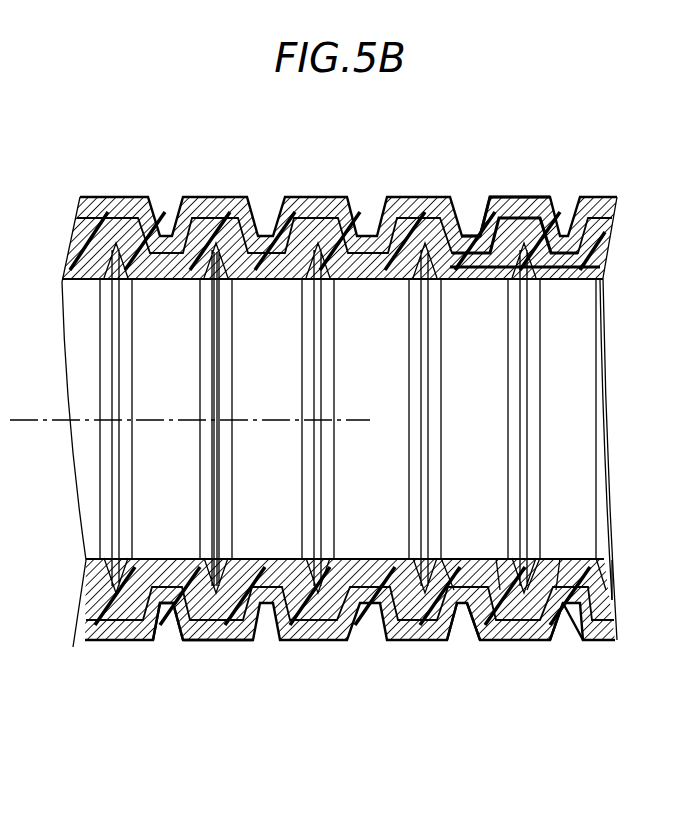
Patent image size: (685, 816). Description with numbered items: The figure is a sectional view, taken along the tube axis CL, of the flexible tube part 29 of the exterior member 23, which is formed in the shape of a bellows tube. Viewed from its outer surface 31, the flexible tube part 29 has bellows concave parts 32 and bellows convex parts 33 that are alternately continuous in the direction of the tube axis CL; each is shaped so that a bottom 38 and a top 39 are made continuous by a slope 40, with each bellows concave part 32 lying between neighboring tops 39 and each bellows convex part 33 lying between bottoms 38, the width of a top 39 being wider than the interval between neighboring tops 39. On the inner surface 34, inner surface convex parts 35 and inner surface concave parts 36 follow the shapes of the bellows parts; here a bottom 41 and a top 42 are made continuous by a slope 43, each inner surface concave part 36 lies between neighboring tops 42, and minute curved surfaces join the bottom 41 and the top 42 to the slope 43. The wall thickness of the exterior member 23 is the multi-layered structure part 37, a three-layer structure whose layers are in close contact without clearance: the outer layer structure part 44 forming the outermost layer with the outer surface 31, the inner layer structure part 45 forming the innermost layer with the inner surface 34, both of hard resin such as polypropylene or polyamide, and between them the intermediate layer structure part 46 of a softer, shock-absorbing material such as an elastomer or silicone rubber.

The exterior member 23 is at (132, 198).
The flexible tube part 29 is at (216, 198).
The outer surface 31 is at (311, 198).
The bellows concave part 32 is at (170, 640).
The bellows convex part 33 is at (212, 640).
The inner surface 34 is at (362, 270).
The inner surface convex part 35 is at (164, 280).
The inner surface concave part 36 is at (222, 252).
The multi-layered structure part 37 is at (458, 128).
The bottom 38 is at (455, 640).
The top 39 is at (503, 636).
The slope 40 is at (470, 632).
The bottom 41 is at (470, 565).
The top 42 is at (532, 570).
The slope 43 is at (498, 568).
The outer layer structure part 44 is at (497, 198).
The inner layer structure part 45 is at (511, 198).
The intermediate layer structure part 46 is at (556, 198).
The tube axis CL is at (21, 416).